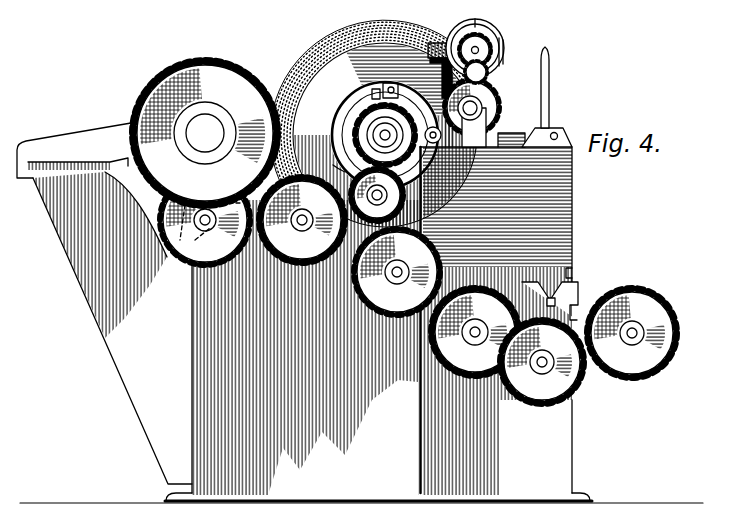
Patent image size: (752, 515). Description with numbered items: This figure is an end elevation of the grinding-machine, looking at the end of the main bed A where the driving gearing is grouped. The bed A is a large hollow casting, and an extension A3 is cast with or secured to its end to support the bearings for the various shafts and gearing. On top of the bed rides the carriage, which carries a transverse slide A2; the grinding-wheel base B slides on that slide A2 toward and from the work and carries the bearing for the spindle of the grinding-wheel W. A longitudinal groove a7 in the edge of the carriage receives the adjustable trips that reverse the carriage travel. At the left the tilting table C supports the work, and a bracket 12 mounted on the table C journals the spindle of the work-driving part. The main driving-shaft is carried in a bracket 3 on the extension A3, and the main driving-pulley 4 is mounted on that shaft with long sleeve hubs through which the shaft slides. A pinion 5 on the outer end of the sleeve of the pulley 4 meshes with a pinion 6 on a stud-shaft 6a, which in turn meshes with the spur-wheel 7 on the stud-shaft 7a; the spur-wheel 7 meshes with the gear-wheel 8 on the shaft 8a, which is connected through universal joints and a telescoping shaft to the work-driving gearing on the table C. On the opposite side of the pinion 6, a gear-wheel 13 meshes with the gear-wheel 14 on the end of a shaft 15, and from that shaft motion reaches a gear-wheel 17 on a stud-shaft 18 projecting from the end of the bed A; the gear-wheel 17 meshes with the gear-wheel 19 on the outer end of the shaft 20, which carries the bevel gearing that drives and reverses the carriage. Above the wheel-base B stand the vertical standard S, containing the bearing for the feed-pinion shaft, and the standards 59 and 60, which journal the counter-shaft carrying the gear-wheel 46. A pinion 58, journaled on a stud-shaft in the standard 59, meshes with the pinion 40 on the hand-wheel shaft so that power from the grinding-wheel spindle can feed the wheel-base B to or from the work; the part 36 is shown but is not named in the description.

The bracket 12 is at (74, 150).
The table C is at (112, 328).
The extension A3 is at (306, 347).
The grinding-wheel W is at (293, 62).
The pinion 5 is at (355, 113).
The bracket 3 is at (389, 72).
The main driving-pulley 4 is at (364, 87).
The pinion 6 is at (366, 135).
The stud-shaft 6a is at (340, 167).
The grinding-wheel base B is at (572, 185).
The slide A2 is at (565, 245).
The longitudinal groove a7 is at (572, 273).
The main bed A is at (361, 392).
The gear-wheel 8 is at (211, 218).
The shaft 8a is at (207, 227).
The spur-wheel 7 is at (302, 220).
The stud-shaft 7a is at (306, 217).
The gear-wheel 13 is at (400, 272).
The gear-wheel 14 is at (475, 332).
The shaft 15 is at (478, 331).
The gear-wheel 17 is at (542, 362).
The stud-shaft 18 is at (545, 360).
The gear-wheel 19 is at (632, 333).
The shaft 20 is at (636, 330).
The vertical standard S is at (437, 77).
The standard 60 is at (497, 115).
The gear-wheel 46 is at (497, 101).
The ring 36 is at (503, 31).
The pinion 40 is at (482, 43).
The standard 59 is at (498, 63).
The pinion 58 is at (487, 78).